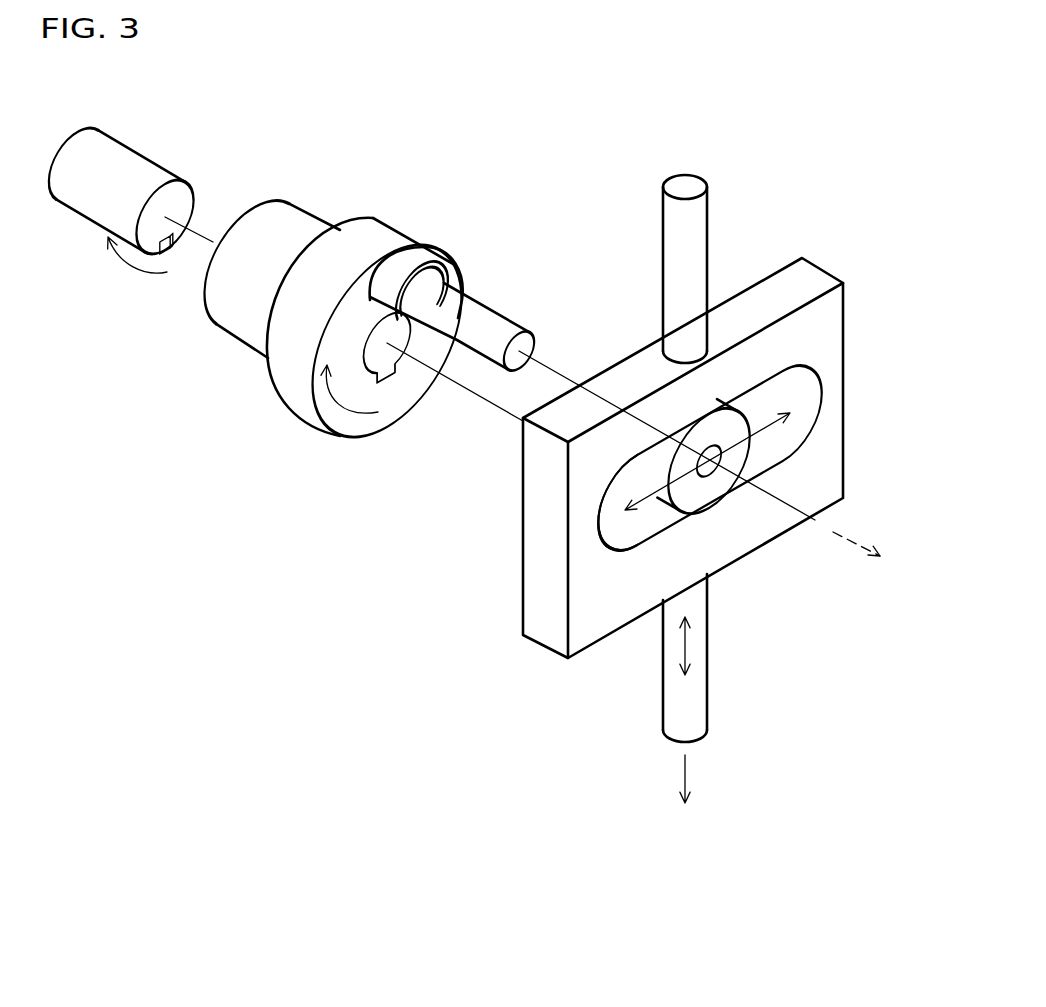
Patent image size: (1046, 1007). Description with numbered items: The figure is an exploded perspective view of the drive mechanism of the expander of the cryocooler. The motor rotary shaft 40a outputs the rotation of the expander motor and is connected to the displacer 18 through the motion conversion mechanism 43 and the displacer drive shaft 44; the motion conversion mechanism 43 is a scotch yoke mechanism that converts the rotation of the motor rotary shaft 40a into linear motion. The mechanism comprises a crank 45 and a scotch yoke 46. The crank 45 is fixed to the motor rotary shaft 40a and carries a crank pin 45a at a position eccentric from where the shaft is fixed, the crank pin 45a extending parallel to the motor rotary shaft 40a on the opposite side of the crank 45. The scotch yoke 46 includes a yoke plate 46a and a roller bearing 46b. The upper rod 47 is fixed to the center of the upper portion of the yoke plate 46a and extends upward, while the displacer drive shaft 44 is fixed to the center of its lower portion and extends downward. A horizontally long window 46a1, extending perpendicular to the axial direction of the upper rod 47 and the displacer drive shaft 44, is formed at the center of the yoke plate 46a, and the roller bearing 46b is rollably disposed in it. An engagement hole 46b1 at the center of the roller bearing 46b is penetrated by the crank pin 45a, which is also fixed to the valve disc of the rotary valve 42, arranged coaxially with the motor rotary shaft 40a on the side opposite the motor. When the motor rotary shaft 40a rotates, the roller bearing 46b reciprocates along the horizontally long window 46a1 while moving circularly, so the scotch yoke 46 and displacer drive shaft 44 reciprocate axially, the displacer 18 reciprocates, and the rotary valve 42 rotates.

The displacer 18 is at (685, 796).
The motor rotary shaft 40a is at (137, 153).
The rotary valve 42 is at (540, 397).
The motion conversion mechanism 43 is at (813, 244).
The displacer drive shaft 44 is at (693, 695).
The crank 45 is at (292, 223).
The crank pin 45a is at (492, 330).
The scotch yoke 46 is at (905, 245).
The yoke plate 46a is at (837, 384).
The horizontally long window 46a1 is at (628, 538).
The roller bearing 46b is at (719, 418).
The engagement hole 46b1 is at (738, 495).
The upper rod 47 is at (690, 228).